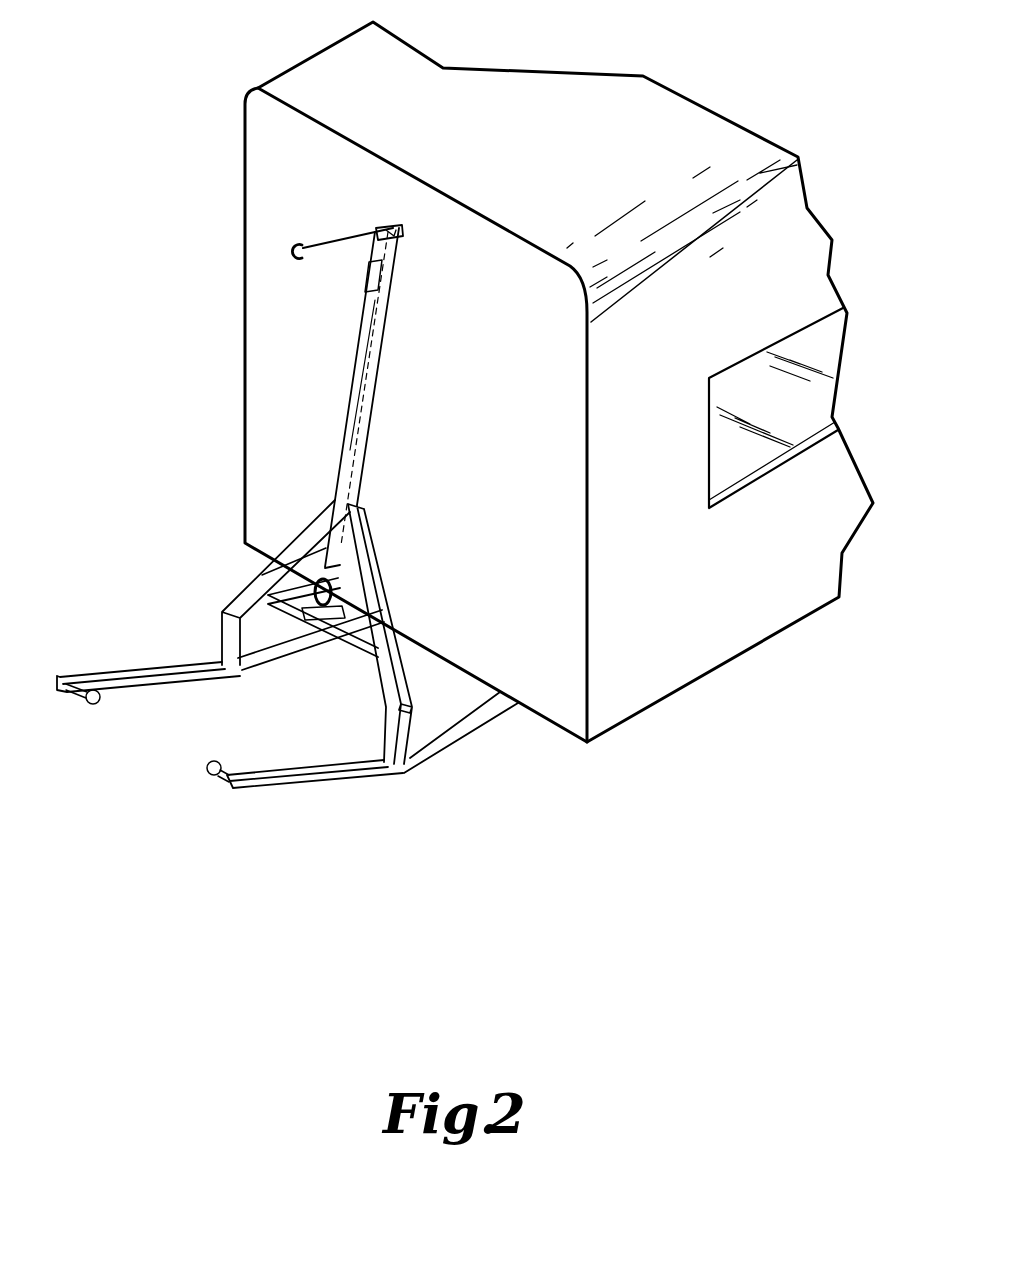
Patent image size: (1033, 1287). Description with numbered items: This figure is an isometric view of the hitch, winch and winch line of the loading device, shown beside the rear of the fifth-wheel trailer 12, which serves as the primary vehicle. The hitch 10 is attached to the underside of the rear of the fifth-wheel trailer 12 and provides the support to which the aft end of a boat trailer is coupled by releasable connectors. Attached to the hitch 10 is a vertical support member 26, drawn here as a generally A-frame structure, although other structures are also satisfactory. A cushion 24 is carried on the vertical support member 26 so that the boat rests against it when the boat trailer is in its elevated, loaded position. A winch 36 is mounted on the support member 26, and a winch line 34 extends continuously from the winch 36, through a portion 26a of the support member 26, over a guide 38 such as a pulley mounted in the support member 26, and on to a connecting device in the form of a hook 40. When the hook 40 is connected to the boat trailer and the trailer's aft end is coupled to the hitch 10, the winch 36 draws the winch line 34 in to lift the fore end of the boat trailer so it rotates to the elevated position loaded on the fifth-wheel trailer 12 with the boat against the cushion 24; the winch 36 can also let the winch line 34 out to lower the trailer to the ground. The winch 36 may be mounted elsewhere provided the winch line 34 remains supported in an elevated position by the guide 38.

The hitch 10 is at (355, 753).
The fifth-wheel trailer 12 is at (632, 93).
The cushion 24 is at (378, 281).
The vertical support member 26 is at (380, 602).
The portion of the support member 26a is at (367, 451).
The winch line 34 is at (342, 233).
The winch 36 is at (317, 575).
The guide 38 is at (398, 230).
The hook 40 is at (292, 248).